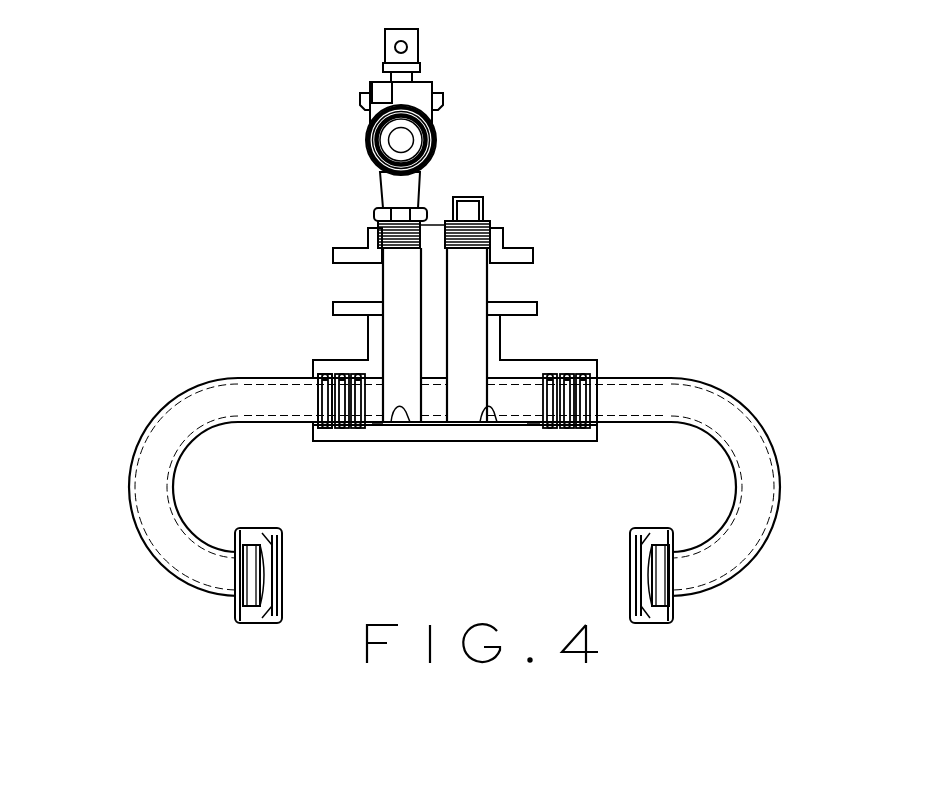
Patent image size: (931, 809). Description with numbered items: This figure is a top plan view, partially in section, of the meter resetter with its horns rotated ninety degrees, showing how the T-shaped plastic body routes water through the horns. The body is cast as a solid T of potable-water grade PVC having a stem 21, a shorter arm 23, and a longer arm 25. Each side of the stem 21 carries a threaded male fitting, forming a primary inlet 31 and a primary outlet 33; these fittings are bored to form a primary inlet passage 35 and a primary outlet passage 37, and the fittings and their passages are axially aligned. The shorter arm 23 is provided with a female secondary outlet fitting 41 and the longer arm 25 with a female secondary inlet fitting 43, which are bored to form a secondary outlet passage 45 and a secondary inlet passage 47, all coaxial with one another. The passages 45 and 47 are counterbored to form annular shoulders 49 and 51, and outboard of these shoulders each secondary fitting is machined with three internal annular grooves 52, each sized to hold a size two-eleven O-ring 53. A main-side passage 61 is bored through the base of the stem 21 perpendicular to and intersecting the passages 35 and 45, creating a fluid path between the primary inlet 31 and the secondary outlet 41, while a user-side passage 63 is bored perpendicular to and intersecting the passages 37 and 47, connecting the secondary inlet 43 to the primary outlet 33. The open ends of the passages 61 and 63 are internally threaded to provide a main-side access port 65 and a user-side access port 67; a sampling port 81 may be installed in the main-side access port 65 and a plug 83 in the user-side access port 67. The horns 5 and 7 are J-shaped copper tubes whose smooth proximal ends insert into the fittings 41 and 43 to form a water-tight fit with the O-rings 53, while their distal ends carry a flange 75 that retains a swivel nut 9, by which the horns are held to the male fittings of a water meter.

The horn 5 is at (135, 455).
The horn 7 is at (768, 447).
The swivel nut 9 is at (640, 528).
The stem 21 is at (542, 320).
The shorter arm 23 is at (321, 320).
The longer arm 25 is at (587, 368).
The primary inlet 31 is at (344, 249).
The primary outlet 33 is at (522, 249).
The primary inlet passage 35 is at (357, 301).
The primary outlet passage 37 is at (523, 301).
The secondary outlet fitting 41 is at (331, 431).
The secondary inlet fitting 43 is at (588, 431).
The secondary outlet passage 45 is at (402, 424).
The secondary inlet passage 47 is at (482, 422).
The annular shoulder 49 is at (380, 431).
The annular shoulder 51 is at (535, 427).
The internal annular groove 52 is at (548, 372).
The O-ring 53 is at (319, 371).
The main-side passage 61 is at (394, 343).
The user-side passage 63 is at (456, 327).
The main-side access port 65 is at (380, 251).
The user-side access port 67 is at (492, 252).
The flange 75 is at (630, 588).
The sampling port 81 is at (367, 137).
The plug 83 is at (460, 197).